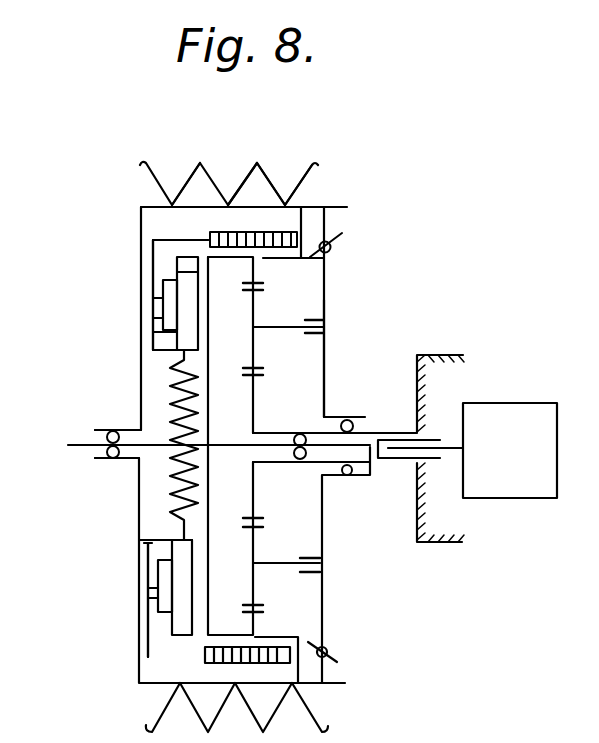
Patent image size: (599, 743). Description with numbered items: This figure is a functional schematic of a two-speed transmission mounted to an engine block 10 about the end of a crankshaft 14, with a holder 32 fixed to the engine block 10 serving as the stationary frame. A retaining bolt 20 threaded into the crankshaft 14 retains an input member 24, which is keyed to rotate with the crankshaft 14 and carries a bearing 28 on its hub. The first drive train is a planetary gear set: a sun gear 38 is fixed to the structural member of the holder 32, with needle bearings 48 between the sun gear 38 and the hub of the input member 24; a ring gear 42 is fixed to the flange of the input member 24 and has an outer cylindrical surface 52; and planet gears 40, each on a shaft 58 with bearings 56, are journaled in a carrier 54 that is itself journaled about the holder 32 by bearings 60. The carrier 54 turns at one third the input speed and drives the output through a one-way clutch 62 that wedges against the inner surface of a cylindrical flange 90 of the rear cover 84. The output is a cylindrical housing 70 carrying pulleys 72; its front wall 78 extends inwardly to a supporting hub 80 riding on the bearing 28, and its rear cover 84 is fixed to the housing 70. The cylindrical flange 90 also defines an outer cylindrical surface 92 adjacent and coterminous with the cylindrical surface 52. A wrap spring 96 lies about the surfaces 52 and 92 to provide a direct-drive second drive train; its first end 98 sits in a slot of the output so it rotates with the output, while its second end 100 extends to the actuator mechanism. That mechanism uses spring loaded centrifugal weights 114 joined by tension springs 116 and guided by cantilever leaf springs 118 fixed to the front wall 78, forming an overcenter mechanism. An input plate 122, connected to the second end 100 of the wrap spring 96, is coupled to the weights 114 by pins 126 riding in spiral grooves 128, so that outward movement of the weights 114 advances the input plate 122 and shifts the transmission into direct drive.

The engine block 10 is at (455, 353).
The crankshaft 14 is at (517, 402).
The retaining bolt 20 is at (370, 478).
The input member 24 is at (215, 362).
The bearing 28 is at (103, 451).
The holder 32 is at (398, 468).
The sun gear 38 is at (262, 400).
The planet gears 40 is at (281, 315).
The ring gear 42 is at (258, 279).
The needle bearings 48 is at (300, 462).
The cylindrical surface 52 is at (212, 227).
The carrier 54 is at (327, 345).
The bearings 56 is at (312, 550).
The shaft 58 is at (276, 565).
The bearings 60 is at (352, 421).
The one-way clutch 62 is at (333, 243).
The cylindrical housing 70 is at (275, 230).
The pulleys 72 is at (155, 173).
The front wall 78 is at (139, 530).
The supporting hub 80 is at (143, 357).
The rear cover 84 is at (316, 210).
The cylindrical flange 90 is at (333, 262).
The outer cylindrical surface 92 is at (288, 207).
The wrap spring 96 is at (253, 225).
The first end 98 is at (313, 222).
The second end 100 is at (167, 240).
The centrifugal weights 114 is at (176, 272).
The tension springs 116 is at (175, 405).
The cantilever leaf springs 118 is at (157, 330).
The input plate 122 is at (177, 266).
The pins 126 is at (163, 290).
The spiral grooves 128 is at (163, 308).